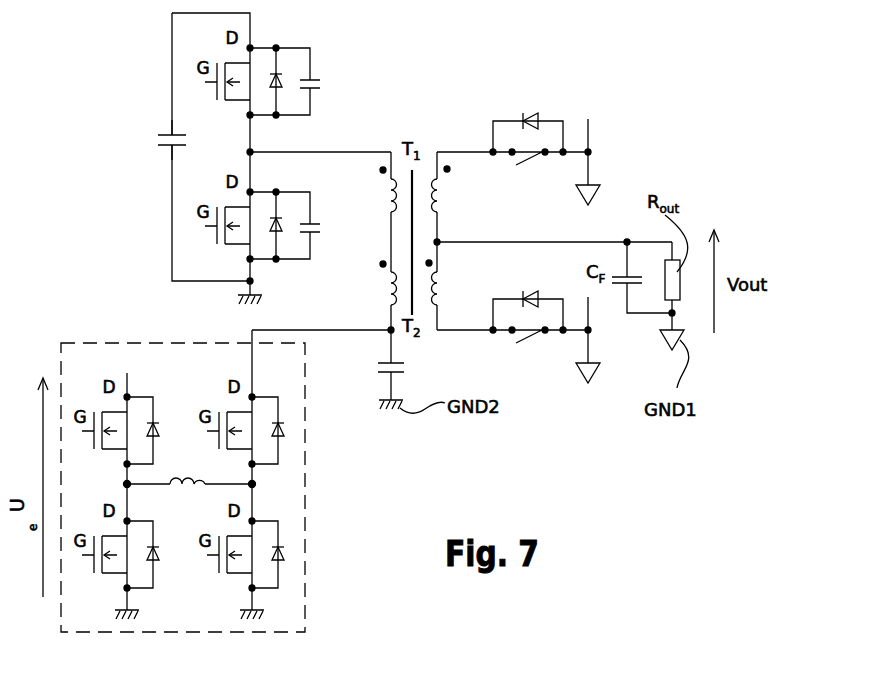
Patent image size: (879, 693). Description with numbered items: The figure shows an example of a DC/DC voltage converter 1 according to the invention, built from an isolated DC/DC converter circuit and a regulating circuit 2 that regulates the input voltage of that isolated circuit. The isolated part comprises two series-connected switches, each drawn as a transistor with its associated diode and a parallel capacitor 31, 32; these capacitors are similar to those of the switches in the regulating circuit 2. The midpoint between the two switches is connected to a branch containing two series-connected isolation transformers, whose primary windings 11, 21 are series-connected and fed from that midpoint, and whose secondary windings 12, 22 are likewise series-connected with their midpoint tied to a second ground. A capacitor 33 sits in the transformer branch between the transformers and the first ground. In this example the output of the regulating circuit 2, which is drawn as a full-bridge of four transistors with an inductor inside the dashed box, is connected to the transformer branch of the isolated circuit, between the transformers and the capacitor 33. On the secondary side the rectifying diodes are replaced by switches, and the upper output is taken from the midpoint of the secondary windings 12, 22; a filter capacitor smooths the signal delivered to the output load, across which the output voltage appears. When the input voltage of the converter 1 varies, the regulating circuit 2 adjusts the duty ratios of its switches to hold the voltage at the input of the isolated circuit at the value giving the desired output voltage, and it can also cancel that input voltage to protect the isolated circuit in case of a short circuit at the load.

The regulating circuit 2 is at (305, 493).
The voltage converter 1 is at (156, 140).
The capacitor C31 31 is at (316, 81).
The capacitor C32 32 is at (316, 225).
The capacitor C33 33 is at (407, 365).
The primary winding L11 11 is at (374, 189).
The secondary winding L12 12 is at (451, 189).
The primary winding L21 21 is at (374, 283).
The secondary winding L22 22 is at (447, 282).